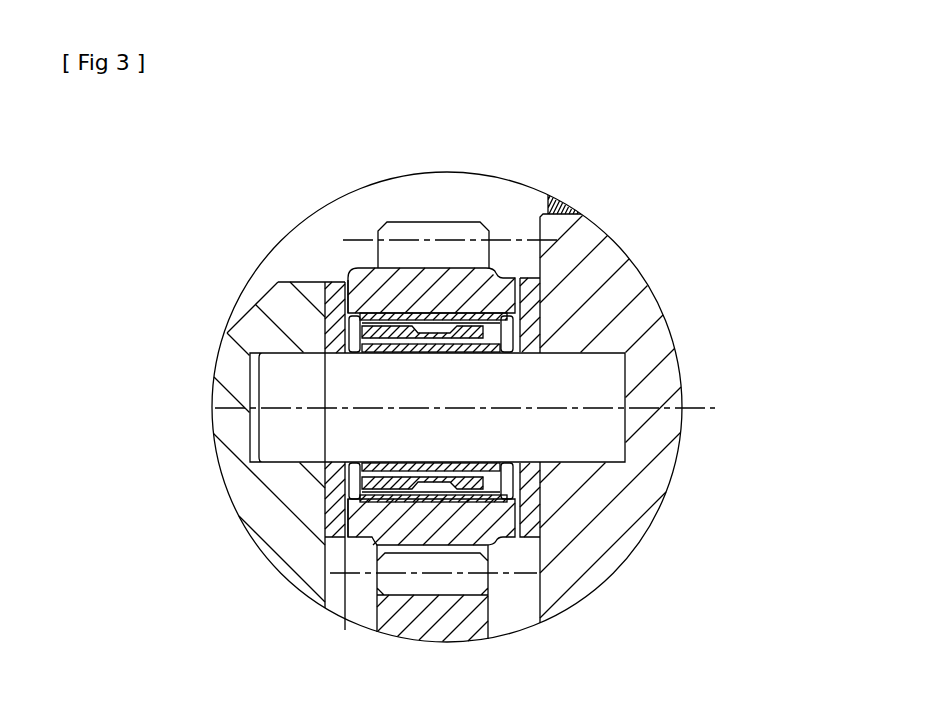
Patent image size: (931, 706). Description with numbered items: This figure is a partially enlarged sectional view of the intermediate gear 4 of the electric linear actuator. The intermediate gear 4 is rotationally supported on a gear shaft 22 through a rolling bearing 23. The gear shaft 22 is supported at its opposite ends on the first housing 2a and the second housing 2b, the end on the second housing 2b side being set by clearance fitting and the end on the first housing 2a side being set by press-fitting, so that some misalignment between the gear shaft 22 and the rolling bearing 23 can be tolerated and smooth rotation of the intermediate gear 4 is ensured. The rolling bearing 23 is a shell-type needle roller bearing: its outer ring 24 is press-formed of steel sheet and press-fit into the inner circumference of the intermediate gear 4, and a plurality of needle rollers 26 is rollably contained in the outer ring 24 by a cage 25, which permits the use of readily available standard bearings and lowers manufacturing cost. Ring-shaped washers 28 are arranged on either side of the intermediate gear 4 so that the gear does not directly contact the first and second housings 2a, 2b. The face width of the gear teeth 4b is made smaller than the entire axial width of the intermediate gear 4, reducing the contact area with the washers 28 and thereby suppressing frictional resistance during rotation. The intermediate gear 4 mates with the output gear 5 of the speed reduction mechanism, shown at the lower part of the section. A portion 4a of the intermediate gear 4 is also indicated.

The first housing 2a is at (260, 330).
The second housing 2b is at (630, 304).
The intermediate gear 4 is at (431, 375).
The flange portion of rotating body 4a is at (365, 312).
The gear teeth 4b is at (428, 233).
The output gear 5 is at (470, 627).
The gear shaft 22 is at (285, 417).
The rolling bearing 23 is at (582, 426).
The outer ring 24 is at (485, 493).
The cage 25 is at (493, 480).
The needle rollers 26 is at (467, 468).
The washers 28 is at (333, 528).